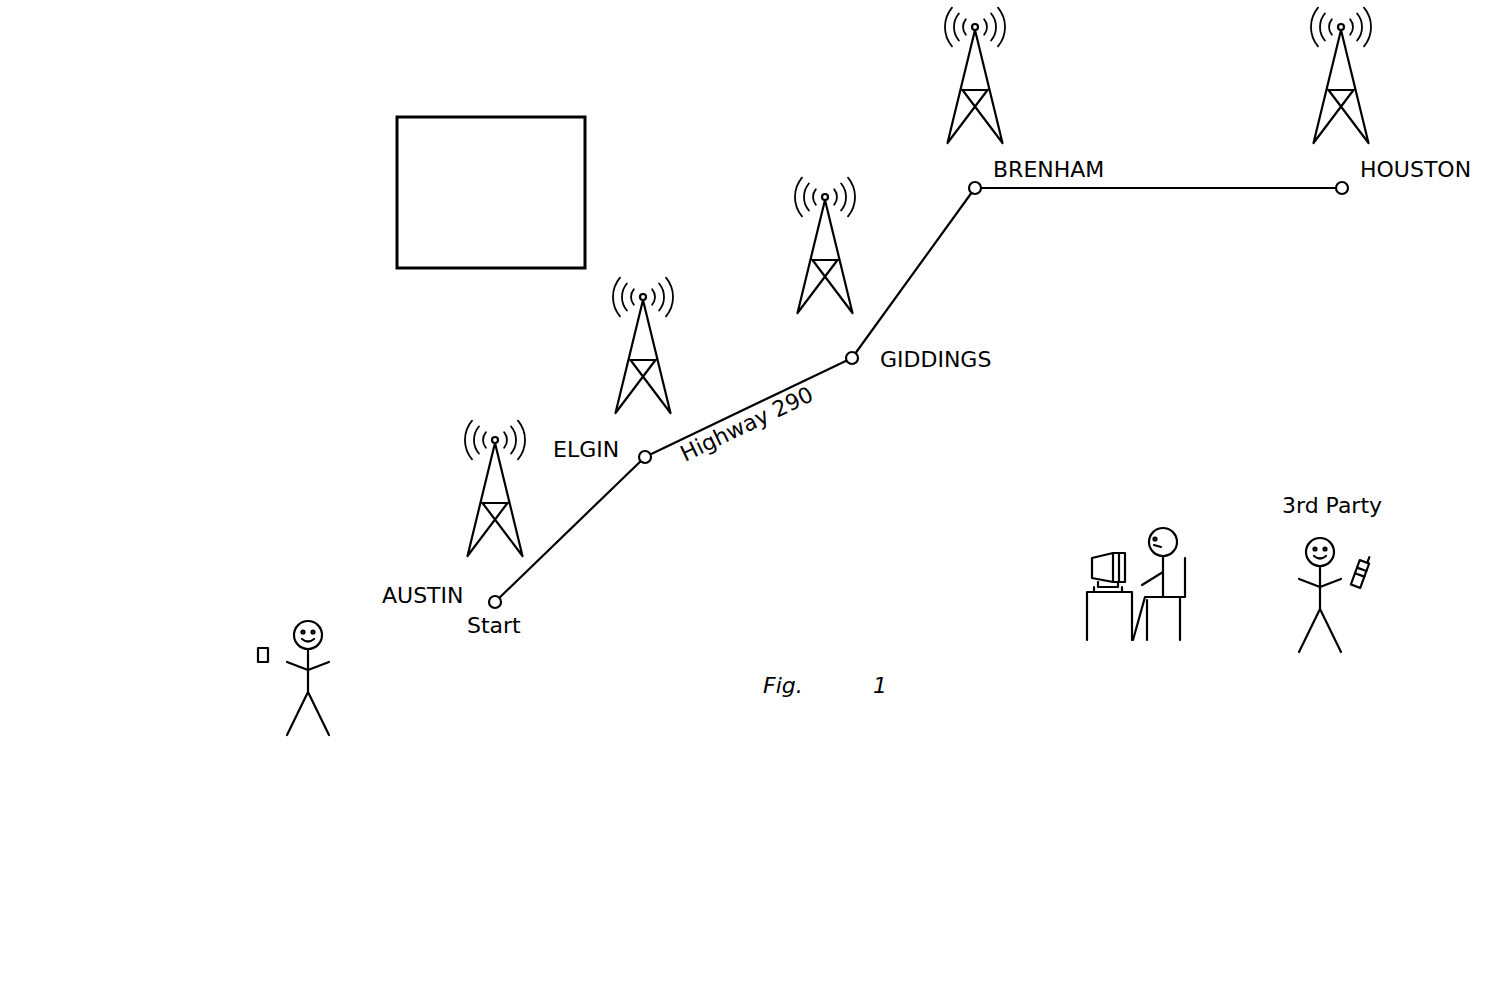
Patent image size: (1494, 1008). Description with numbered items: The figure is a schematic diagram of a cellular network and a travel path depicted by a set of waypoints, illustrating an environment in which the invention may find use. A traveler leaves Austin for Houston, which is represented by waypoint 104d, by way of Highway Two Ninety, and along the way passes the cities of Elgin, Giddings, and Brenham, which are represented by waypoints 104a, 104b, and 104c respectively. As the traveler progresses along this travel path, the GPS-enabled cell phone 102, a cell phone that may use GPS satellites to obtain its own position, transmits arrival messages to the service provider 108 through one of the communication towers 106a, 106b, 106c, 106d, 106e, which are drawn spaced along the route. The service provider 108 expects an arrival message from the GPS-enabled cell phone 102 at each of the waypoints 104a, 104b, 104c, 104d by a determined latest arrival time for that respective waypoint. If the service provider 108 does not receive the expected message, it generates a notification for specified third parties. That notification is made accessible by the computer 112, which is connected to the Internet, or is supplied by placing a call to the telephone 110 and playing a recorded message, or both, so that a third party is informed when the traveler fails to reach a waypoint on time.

The GPS-enabled cell phone 102 is at (258, 655).
The waypoint 104a is at (650, 462).
The waypoint 104b is at (857, 363).
The waypoint 104c is at (980, 193).
The waypoint 104d is at (1347, 193).
The communication tower 106a is at (485, 481).
The communication tower 106b is at (633, 340).
The communication tower 106c is at (815, 240).
The communication tower 106d is at (965, 70).
The communication tower 106e is at (1331, 70).
The service provider 108 is at (519, 242).
The telephone 110 is at (1363, 588).
The computer 112 is at (1092, 568).